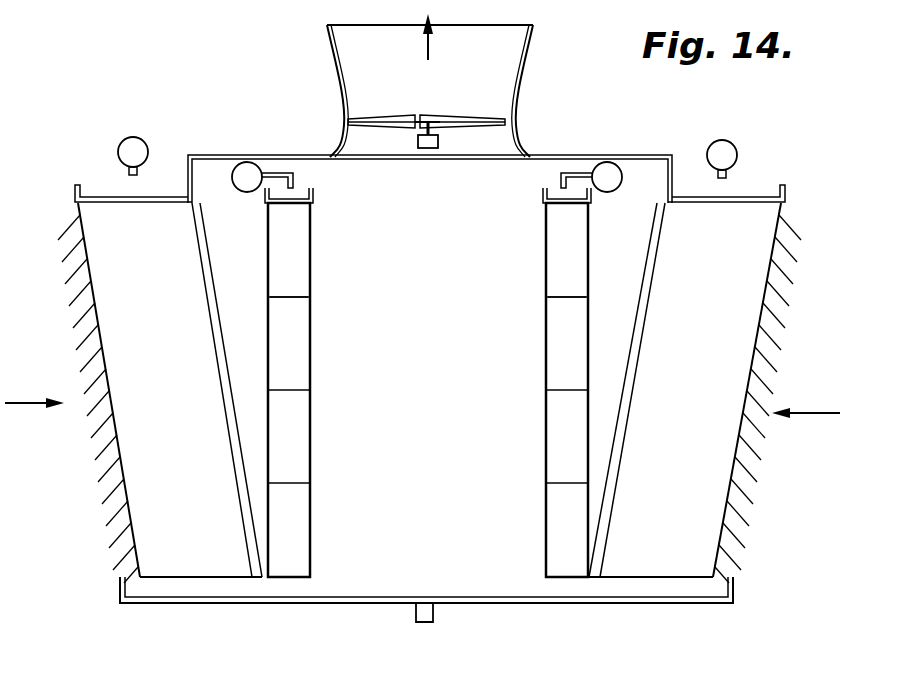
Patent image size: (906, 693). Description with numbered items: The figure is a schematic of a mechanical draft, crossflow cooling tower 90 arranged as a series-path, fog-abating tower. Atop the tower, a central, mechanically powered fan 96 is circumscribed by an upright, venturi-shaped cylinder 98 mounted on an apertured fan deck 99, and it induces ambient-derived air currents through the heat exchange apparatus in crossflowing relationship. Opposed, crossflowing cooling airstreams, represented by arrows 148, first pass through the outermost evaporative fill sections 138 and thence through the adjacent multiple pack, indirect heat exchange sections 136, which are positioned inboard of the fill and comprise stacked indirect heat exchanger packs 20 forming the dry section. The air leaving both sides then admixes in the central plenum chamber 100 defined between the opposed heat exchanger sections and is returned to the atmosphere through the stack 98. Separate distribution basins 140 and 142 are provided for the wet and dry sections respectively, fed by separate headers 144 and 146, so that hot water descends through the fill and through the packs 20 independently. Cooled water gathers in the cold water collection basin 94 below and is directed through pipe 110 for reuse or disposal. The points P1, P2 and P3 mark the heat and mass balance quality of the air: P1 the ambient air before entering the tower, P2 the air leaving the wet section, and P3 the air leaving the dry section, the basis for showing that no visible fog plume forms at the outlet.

The mechanical draft crossflow cooling tower 90 is at (556, 42).
The venturi-shaped cylinder 98 is at (524, 90).
The fan 96 is at (380, 118).
The apertured fan deck 99 is at (587, 155).
The distribution basin 140 is at (73, 192).
The evaporative fill section 138 is at (429, 393).
The indirect heat exchange section 136 is at (330, 242).
The distribution basin 142 is at (314, 194).
The header 146 is at (238, 192).
The header 144 is at (143, 140).
The indirect heat exchanger pack 20 is at (326, 338).
The central plenum chamber 100 is at (421, 374).
The cooling airstream arrows 148 is at (26, 402).
The ambient air quality point P1 is at (822, 414).
The wet section outlet air quality point P2 is at (604, 402).
The dry section outlet air quality point P3 is at (527, 392).
The cold water collection basin 94 is at (298, 606).
The pipe 110 is at (434, 612).